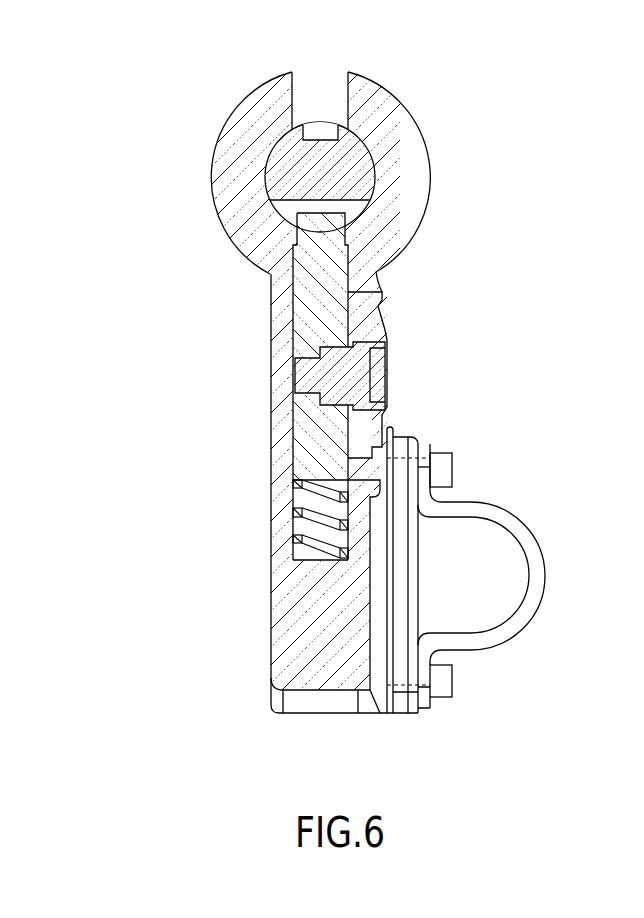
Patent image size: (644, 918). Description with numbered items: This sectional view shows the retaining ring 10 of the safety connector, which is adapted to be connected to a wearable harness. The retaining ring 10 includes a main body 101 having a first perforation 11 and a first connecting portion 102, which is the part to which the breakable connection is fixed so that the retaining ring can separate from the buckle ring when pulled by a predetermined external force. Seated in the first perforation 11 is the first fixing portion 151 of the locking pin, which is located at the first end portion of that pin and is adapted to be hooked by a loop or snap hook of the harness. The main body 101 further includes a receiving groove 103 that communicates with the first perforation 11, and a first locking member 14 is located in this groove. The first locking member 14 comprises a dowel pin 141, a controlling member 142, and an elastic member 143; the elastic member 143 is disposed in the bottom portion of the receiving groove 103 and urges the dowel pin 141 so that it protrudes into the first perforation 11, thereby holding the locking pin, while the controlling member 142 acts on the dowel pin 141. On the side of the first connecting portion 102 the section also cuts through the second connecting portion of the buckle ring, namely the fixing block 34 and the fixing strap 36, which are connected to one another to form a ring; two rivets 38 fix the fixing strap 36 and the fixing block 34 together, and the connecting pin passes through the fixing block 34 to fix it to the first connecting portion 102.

The retaining ring 10 is at (170, 90).
The main body 101 is at (400, 113).
The first connecting portion 102 is at (376, 695).
The receiving groove 103 is at (356, 290).
The first perforation 11 is at (272, 212).
The first fixing portion 151 is at (355, 175).
The first locking member 14 is at (231, 386).
The dowel pin 141 is at (303, 303).
The controlling member 142 is at (358, 422).
The elastic member 143 is at (245, 520).
The fixing block 34 is at (405, 695).
The fixing strap 36 is at (545, 577).
The rivet 38 is at (440, 470).